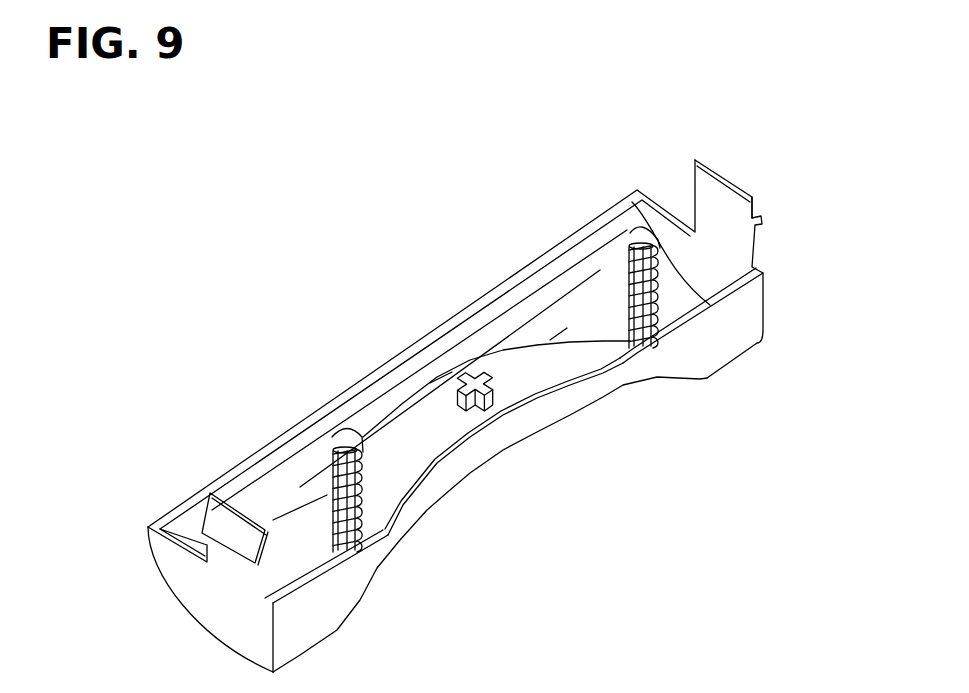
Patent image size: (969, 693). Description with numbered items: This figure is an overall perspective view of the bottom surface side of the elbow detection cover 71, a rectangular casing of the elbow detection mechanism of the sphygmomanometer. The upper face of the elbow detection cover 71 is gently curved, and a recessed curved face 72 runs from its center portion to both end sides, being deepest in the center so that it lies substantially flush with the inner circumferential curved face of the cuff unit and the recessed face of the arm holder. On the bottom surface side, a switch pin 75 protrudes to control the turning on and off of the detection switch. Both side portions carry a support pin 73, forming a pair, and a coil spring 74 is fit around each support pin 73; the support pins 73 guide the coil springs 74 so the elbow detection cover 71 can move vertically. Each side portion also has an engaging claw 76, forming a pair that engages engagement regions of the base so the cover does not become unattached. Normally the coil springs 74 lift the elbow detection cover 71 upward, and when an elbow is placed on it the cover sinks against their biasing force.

The elbow detection cover 71 is at (748, 317).
The recessed curved face 72 is at (527, 423).
The support pin 73 is at (655, 292).
The coil spring 74 is at (637, 228).
The switch pin 75 is at (480, 403).
The engaging claw 76 is at (720, 200).